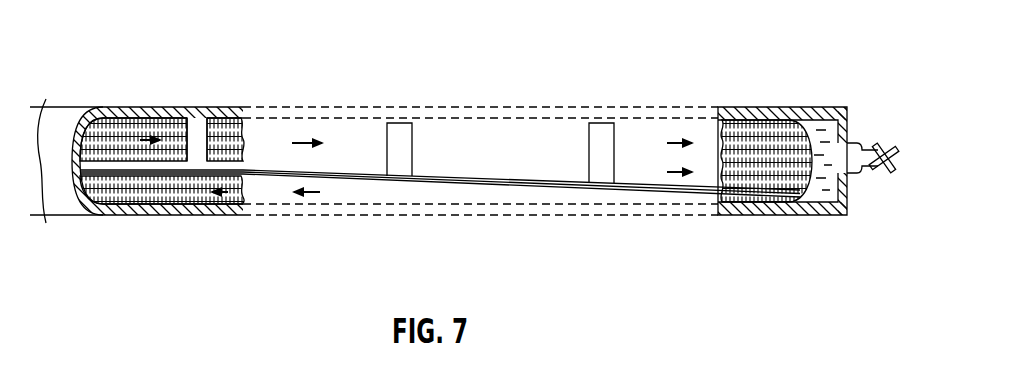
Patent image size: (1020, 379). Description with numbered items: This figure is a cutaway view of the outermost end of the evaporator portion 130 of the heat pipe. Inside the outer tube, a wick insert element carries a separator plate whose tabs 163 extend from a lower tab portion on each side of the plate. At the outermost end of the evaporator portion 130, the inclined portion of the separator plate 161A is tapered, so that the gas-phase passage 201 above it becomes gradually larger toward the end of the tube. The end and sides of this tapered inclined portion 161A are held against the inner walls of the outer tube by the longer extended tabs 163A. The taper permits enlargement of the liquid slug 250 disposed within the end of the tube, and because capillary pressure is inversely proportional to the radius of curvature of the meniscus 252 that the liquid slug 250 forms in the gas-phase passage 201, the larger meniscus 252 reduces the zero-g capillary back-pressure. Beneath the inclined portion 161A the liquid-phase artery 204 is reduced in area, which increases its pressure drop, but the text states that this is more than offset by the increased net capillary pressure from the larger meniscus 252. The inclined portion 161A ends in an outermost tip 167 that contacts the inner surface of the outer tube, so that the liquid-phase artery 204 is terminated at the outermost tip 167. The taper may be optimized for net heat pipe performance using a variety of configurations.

The evaporator portion 130 is at (136, 40).
The tabs 163 is at (204, 118).
The extended tabs 163A is at (400, 126).
The gas-phase passage 201 is at (507, 138).
The liquid-phase artery 204 is at (262, 196).
The inclined portion of the separator plate 161A is at (470, 186).
The outermost tip 167 is at (822, 210).
The meniscus 252 is at (806, 146).
The liquid slug 250 is at (833, 128).